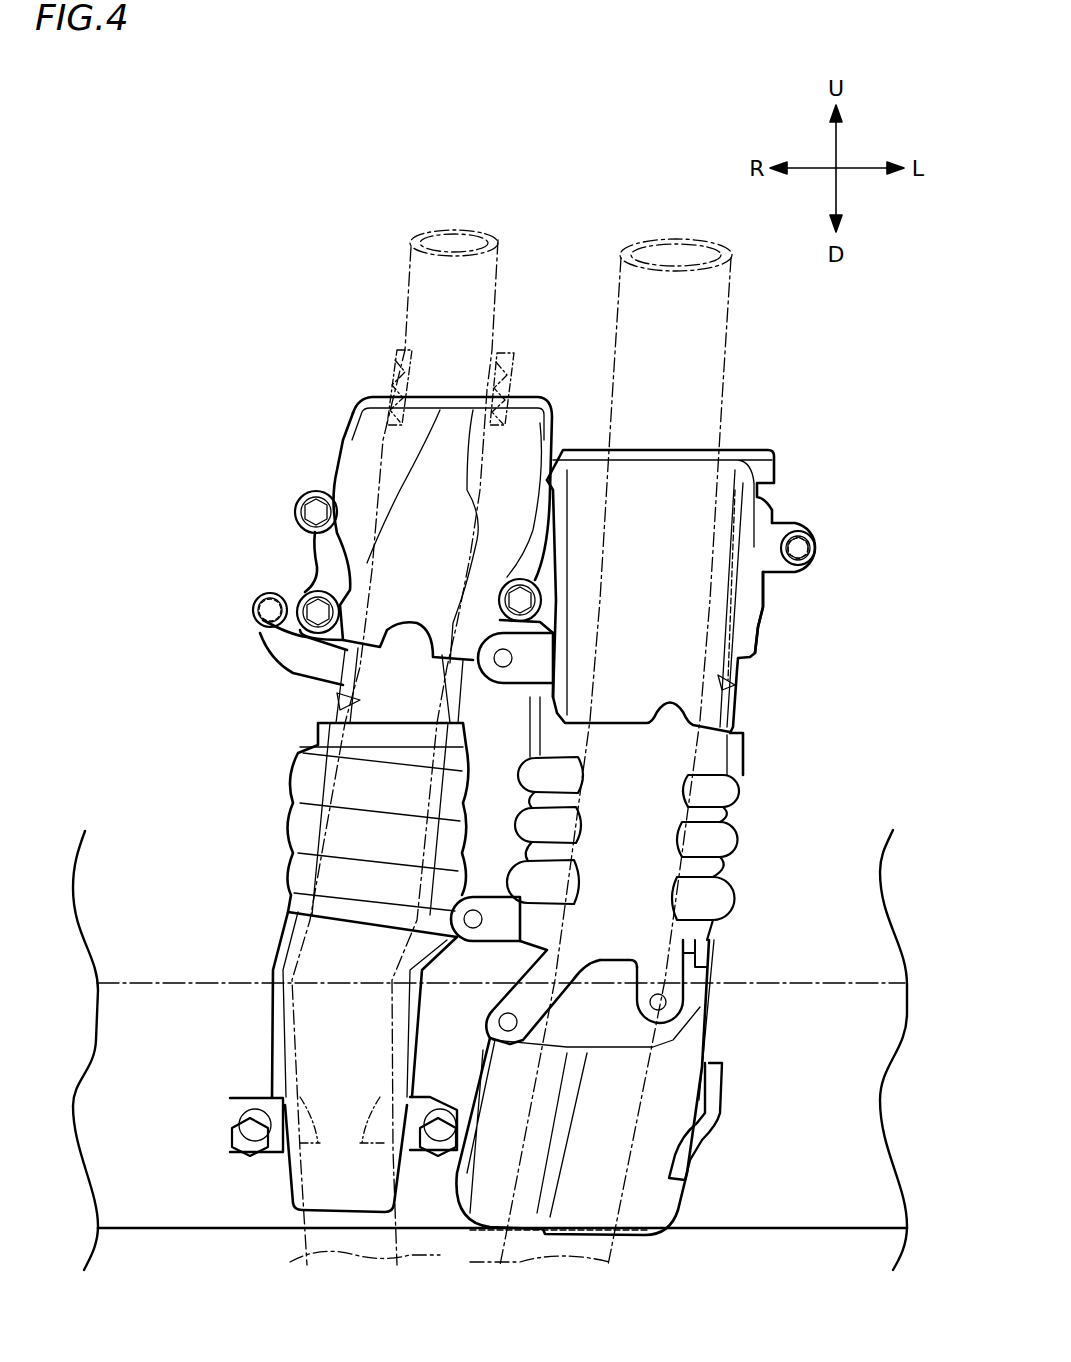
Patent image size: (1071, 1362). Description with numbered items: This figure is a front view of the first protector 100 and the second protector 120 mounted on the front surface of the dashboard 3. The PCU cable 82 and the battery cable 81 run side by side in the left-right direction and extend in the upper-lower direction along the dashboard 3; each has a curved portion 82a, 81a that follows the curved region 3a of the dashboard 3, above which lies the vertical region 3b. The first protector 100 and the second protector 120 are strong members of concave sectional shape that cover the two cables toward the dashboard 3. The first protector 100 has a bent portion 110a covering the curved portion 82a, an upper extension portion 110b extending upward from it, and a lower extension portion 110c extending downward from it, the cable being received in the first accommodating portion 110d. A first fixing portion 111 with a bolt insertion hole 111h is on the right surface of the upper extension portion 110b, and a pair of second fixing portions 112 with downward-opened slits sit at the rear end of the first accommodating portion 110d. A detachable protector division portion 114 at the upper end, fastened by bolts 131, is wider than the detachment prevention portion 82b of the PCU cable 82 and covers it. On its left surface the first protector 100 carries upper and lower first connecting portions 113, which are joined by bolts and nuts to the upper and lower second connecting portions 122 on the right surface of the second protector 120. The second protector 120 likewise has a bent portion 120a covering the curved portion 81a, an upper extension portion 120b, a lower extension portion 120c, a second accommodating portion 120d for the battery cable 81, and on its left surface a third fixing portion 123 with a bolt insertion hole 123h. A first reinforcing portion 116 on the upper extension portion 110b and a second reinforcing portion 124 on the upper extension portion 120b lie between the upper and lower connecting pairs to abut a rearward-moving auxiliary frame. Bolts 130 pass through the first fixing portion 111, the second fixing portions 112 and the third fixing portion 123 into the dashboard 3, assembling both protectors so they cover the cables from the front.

The dashboard 3 is at (852, 1092).
The curved region 3a is at (853, 983).
The vertical region 3b is at (840, 870).
The battery cable 81 is at (730, 328).
The curved portion 81a is at (690, 1003).
The PCU cable 82 is at (406, 300).
The curved portion 82a is at (345, 1005).
The detachment prevention portion 82b is at (340, 410).
The first protector 100 is at (359, 825).
The bent portion 110a is at (262, 953).
The upper extension portion 110b is at (290, 566).
The lower extension portion 110c is at (258, 1056).
The first accommodating portion 110d is at (338, 700).
The first fixing portion 111 is at (290, 668).
The bolt insertion hole 111h is at (262, 618).
The second fixing portions 112 is at (222, 1160).
The first connecting portions 113 is at (488, 684).
The protector division portion 114 is at (318, 468).
The first reinforcing portion 116 is at (291, 852).
The second protector 120 is at (684, 794).
The bent portion 120a is at (745, 977).
The upper extension portion 120b is at (772, 635).
The lower extension portion 120c is at (726, 1062).
The second accommodating portion 120d is at (722, 682).
The second connecting portions 122 is at (504, 692).
The third fixing portion 123 is at (826, 517).
The bolt insertion hole 123h is at (808, 558).
The second reinforcing portion 124 is at (742, 840).
The bolts 130 is at (262, 600).
The bolts 131 is at (296, 505).